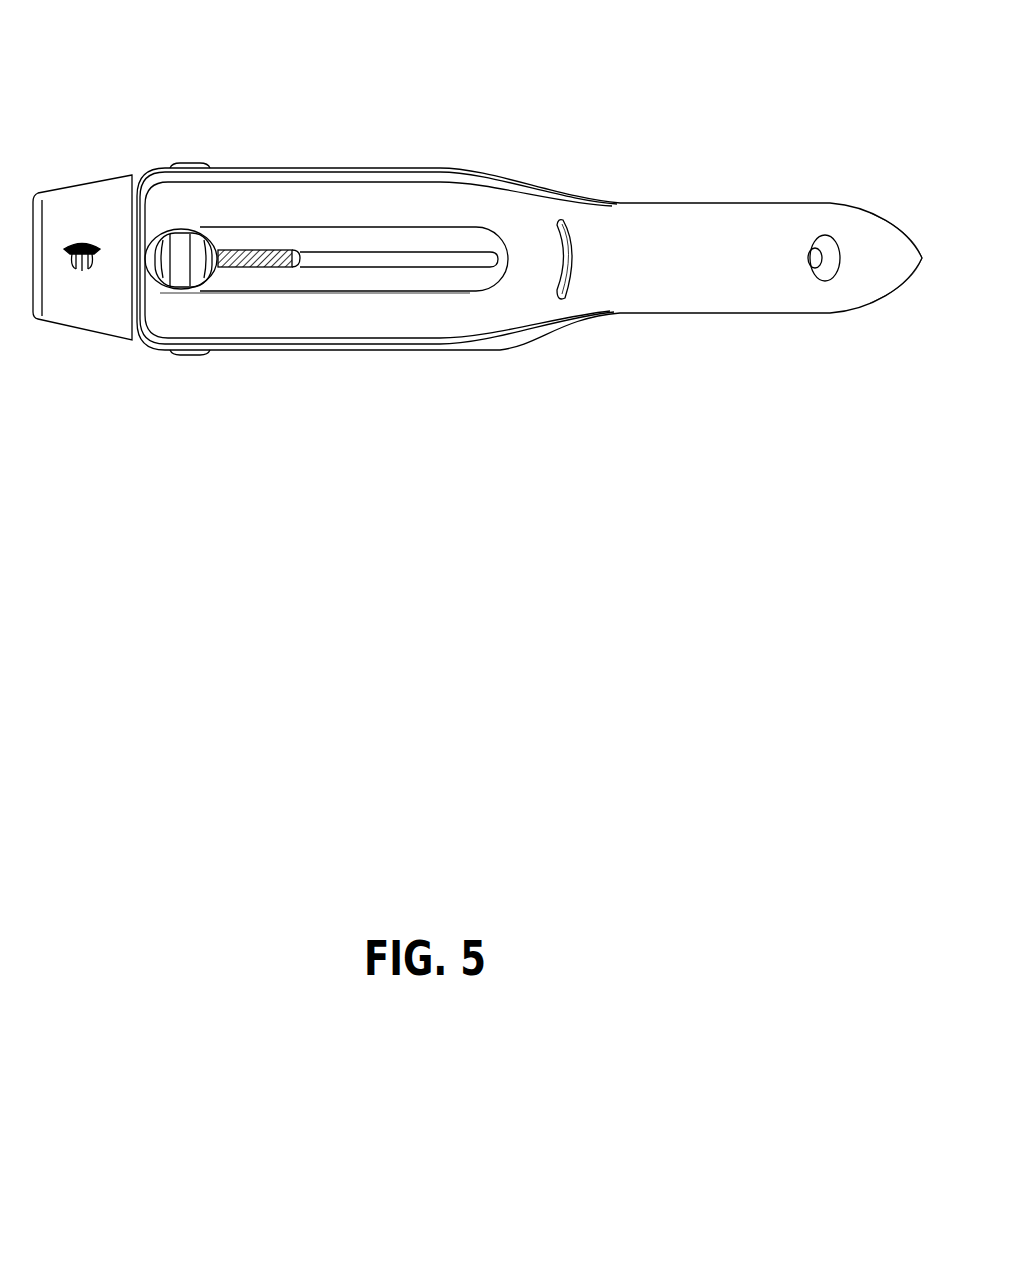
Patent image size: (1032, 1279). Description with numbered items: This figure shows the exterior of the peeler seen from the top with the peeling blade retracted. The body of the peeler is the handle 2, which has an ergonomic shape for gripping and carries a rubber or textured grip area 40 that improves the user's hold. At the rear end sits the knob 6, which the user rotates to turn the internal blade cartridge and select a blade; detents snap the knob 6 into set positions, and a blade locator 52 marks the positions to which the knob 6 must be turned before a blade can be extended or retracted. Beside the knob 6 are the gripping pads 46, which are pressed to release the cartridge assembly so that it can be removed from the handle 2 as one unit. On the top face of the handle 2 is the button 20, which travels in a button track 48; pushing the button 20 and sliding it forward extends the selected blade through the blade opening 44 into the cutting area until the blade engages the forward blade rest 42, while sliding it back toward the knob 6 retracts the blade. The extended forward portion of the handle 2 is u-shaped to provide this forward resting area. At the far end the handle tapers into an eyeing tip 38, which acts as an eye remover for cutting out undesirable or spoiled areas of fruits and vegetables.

The handle 2 is at (509, 200).
The knob 6 is at (85, 214).
The button 20 is at (183, 276).
The eyeing tip 38 is at (922, 262).
The grip area 40 is at (312, 168).
The forward blade rest 42 is at (821, 281).
The blade opening 44 is at (580, 255).
The gripping pads 46 is at (187, 163).
The button track 48 is at (455, 268).
The blade locator 52 is at (80, 272).